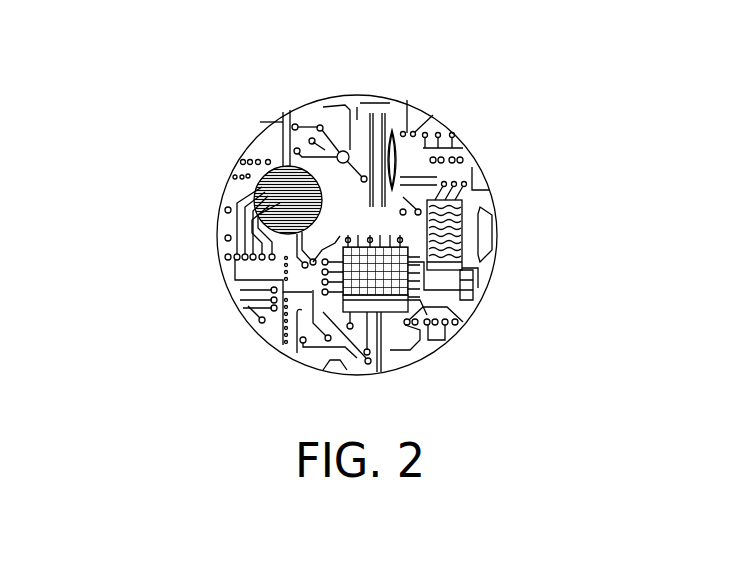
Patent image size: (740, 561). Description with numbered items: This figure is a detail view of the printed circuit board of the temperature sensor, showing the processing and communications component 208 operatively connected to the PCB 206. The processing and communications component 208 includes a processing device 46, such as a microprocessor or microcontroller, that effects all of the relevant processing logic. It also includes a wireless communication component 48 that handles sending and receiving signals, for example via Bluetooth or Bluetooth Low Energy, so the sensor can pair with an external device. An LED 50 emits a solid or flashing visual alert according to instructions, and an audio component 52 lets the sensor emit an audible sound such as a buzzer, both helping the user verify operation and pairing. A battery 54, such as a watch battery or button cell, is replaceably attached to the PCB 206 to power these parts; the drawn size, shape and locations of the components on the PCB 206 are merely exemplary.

The PCB 206 is at (218, 252).
The processing and communications component 208 is at (137, 108).
The audio component 52 is at (337, 155).
The battery 54 is at (256, 184).
The LED 50 is at (385, 146).
The wireless communication component 48 is at (462, 236).
The processing device 46 is at (470, 294).